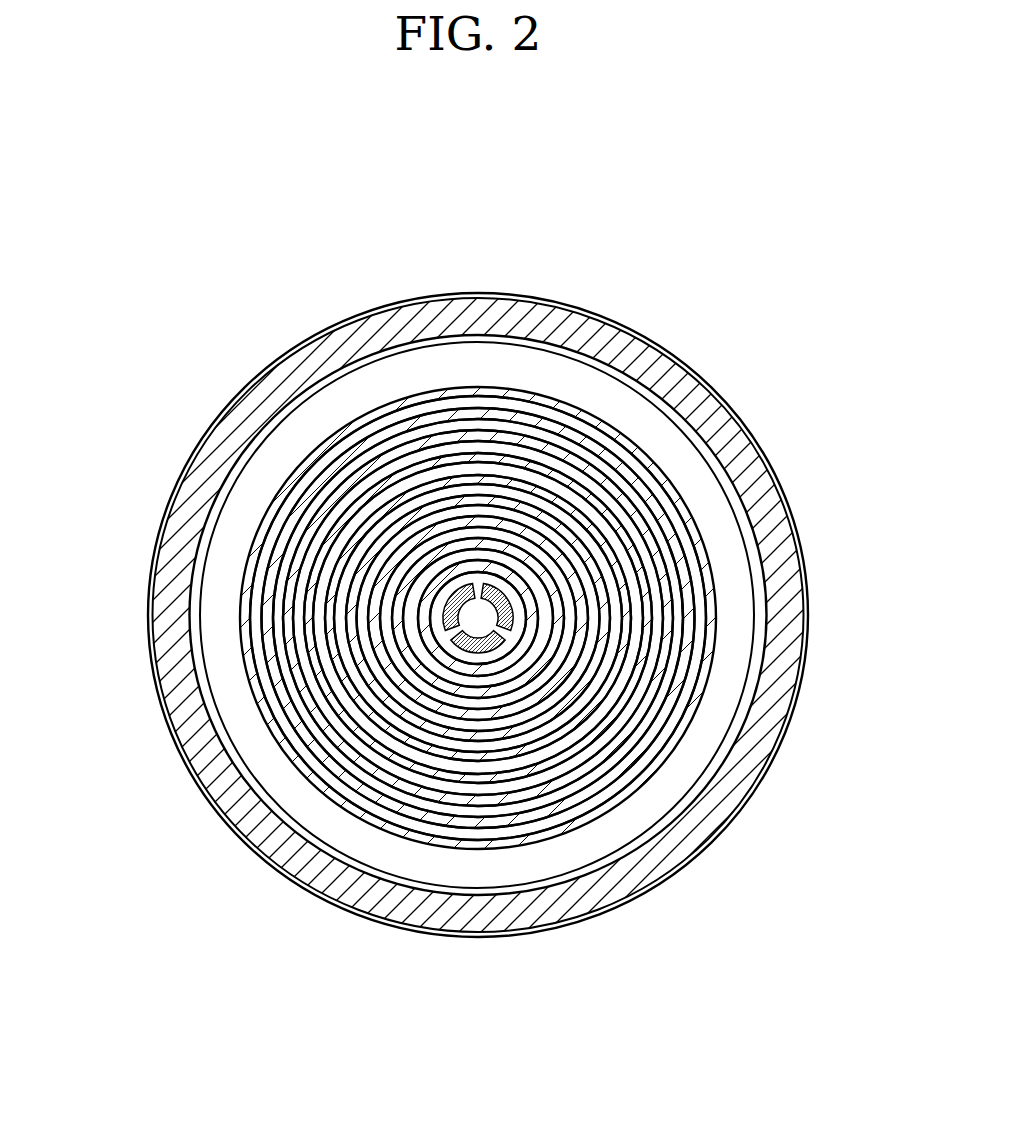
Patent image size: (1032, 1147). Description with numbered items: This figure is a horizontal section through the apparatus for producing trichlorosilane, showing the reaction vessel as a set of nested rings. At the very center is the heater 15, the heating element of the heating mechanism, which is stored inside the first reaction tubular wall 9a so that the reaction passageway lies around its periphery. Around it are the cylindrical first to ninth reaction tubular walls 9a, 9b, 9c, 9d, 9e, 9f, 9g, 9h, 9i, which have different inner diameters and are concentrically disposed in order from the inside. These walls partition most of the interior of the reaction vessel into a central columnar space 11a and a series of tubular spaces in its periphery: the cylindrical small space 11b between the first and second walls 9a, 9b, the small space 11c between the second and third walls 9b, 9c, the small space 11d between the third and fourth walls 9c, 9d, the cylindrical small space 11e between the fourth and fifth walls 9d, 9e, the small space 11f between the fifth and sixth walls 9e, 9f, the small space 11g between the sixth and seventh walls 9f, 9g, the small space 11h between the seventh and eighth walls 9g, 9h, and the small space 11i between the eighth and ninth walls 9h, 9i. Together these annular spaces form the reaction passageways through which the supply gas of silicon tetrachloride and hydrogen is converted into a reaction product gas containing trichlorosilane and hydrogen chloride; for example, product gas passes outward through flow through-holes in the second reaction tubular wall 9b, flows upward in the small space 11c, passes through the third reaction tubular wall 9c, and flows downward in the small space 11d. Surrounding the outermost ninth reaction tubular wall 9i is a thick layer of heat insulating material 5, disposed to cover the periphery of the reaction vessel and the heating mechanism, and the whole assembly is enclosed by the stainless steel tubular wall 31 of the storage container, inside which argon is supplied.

The heat insulating material 5 is at (530, 318).
The tubular wall 31 is at (627, 327).
The heater 15 is at (468, 650).
The first reaction tubular wall 9a is at (493, 658).
The second reaction tubular wall 9b is at (540, 670).
The third reaction tubular wall 9c is at (585, 673).
The fourth reaction tubular wall 9d is at (612, 685).
The fifth reaction tubular wall 9e is at (613, 660).
The sixth reaction tubular wall 9f is at (643, 622).
The seventh reaction tubular wall 9g is at (667, 583).
The eighth reaction tubular wall 9h is at (677, 527).
The ninth reaction tubular wall 9i is at (673, 483).
The central columnar space 11a is at (472, 618).
The cylindrical small space 11b is at (445, 656).
The small space 11c is at (437, 660).
The small space 11d is at (410, 660).
The cylindrical small space 11e is at (380, 660).
The small space 11f is at (323, 640).
The small space 11g is at (300, 613).
The small space 11h is at (285, 563).
The small space 11i is at (283, 522).